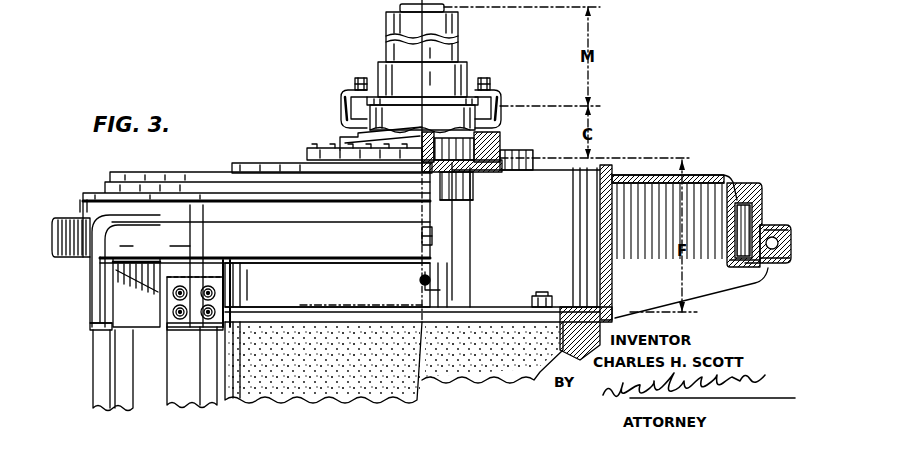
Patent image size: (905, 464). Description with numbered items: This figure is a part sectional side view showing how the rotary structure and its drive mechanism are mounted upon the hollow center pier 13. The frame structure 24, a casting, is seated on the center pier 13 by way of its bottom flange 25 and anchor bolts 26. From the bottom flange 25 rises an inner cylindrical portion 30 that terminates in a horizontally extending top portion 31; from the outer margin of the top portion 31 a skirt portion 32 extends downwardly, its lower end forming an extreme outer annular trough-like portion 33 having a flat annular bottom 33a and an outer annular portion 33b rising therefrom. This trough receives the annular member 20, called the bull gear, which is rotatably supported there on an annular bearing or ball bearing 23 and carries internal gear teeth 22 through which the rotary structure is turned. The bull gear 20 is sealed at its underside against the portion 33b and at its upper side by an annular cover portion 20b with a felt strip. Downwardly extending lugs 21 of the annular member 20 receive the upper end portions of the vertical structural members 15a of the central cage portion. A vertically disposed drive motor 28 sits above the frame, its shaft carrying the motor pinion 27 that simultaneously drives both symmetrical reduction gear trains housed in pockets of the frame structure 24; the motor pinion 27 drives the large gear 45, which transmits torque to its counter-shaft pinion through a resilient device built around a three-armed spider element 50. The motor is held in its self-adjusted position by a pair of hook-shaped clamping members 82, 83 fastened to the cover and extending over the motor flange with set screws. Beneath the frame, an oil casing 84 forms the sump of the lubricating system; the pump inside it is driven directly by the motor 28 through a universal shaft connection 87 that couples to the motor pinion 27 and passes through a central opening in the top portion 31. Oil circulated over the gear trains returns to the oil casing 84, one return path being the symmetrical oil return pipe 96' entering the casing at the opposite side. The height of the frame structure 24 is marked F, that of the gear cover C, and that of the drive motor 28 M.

The center pier 13 is at (407, 382).
The vertical structural members 15a is at (171, 367).
The annular member 20 is at (66, 223).
The annular cover portion 20b is at (747, 203).
The lugs 21 is at (92, 290).
The internal gear teeth 22 is at (759, 207).
The annular bearing 23 is at (768, 266).
The frame structure 24 is at (698, 174).
The bottom flange 25 is at (573, 303).
The anchor bolts 26 is at (531, 299).
The motor pinion 27 is at (453, 174).
The drive motor 28 is at (460, 52).
The inner cylindrical portion 30 is at (600, 222).
The top portion 31 is at (718, 176).
The skirt portion 32 is at (735, 261).
The trough-like portion 33 is at (751, 268).
The flat annular bottom 33a is at (742, 268).
The outer annular portion 33b is at (774, 258).
The large gear 45 is at (483, 129).
The spider element 50 is at (470, 173).
The clamping member 82 is at (344, 94).
The clamping member 83 is at (501, 96).
The oil casing 84 is at (433, 261).
The universal shaft connection 87 is at (364, 160).
The oil return pipe 96' is at (402, 282).